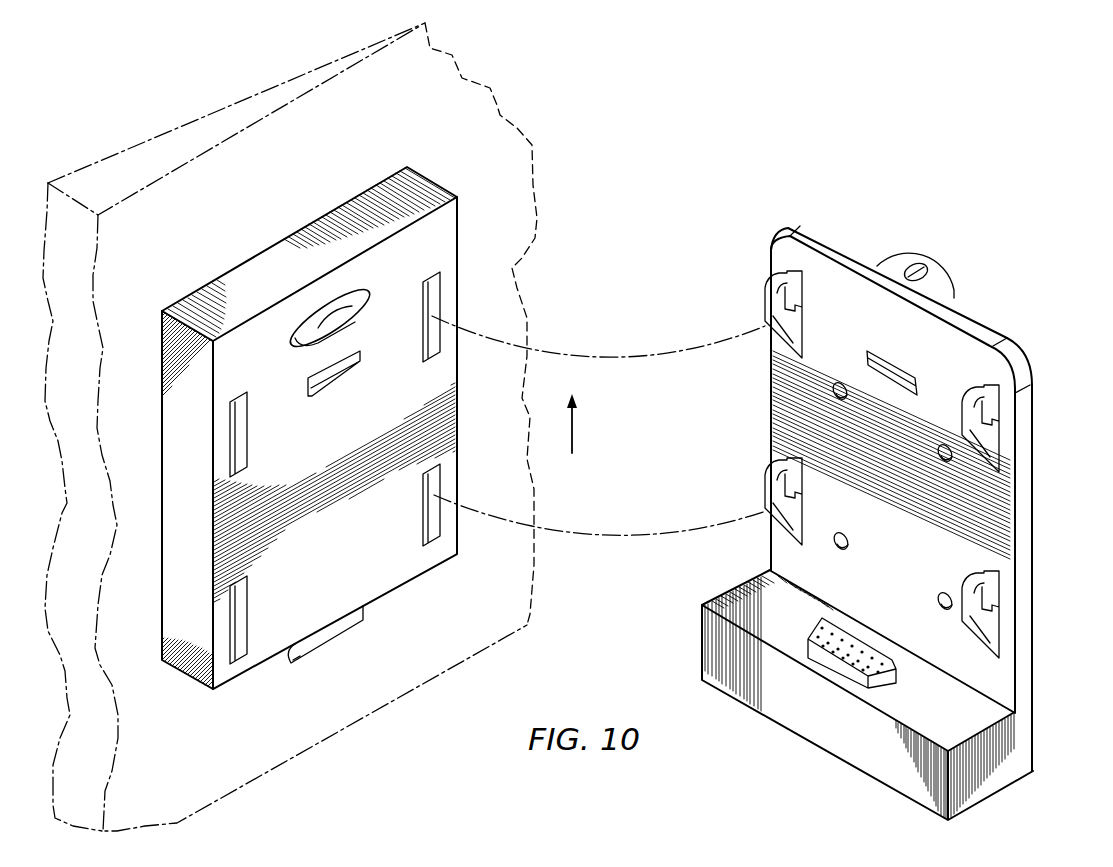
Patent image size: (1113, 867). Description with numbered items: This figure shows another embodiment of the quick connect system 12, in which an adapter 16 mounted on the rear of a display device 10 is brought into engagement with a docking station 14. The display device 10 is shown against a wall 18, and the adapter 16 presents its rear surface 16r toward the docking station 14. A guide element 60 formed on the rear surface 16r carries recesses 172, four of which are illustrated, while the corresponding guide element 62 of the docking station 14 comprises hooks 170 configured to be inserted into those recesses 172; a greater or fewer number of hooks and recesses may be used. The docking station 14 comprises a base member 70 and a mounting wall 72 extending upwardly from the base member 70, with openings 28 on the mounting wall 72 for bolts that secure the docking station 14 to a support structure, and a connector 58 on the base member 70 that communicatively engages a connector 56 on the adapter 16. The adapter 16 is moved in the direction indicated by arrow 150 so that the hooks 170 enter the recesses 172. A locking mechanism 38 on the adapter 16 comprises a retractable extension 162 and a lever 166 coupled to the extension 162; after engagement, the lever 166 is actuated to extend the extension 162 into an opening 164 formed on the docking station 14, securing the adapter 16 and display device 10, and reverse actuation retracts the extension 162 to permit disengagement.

The display device 10 is at (219, 84).
The wall 18 is at (118, 152).
The adapter 16 is at (165, 437).
The guide element 60 is at (320, 428).
The lever 166 is at (295, 343).
The recesses 172 is at (425, 323).
The retractable extension 162 is at (333, 385).
The locking mechanism 38 is at (311, 453).
The rear surface of adapter 16r is at (353, 588).
The connector 56 is at (335, 638).
The mounting direction arrow 150 is at (573, 432).
The quick connect system 12 is at (885, 465).
The docking station 14 is at (885, 498).
The mounting wall 72 is at (1036, 533).
The guide element 62 is at (741, 422).
The hooks 170 is at (770, 308).
The opening 164 is at (893, 375).
The openings 28 is at (845, 402).
The base member 70 is at (873, 695).
The connector 58 is at (810, 630).